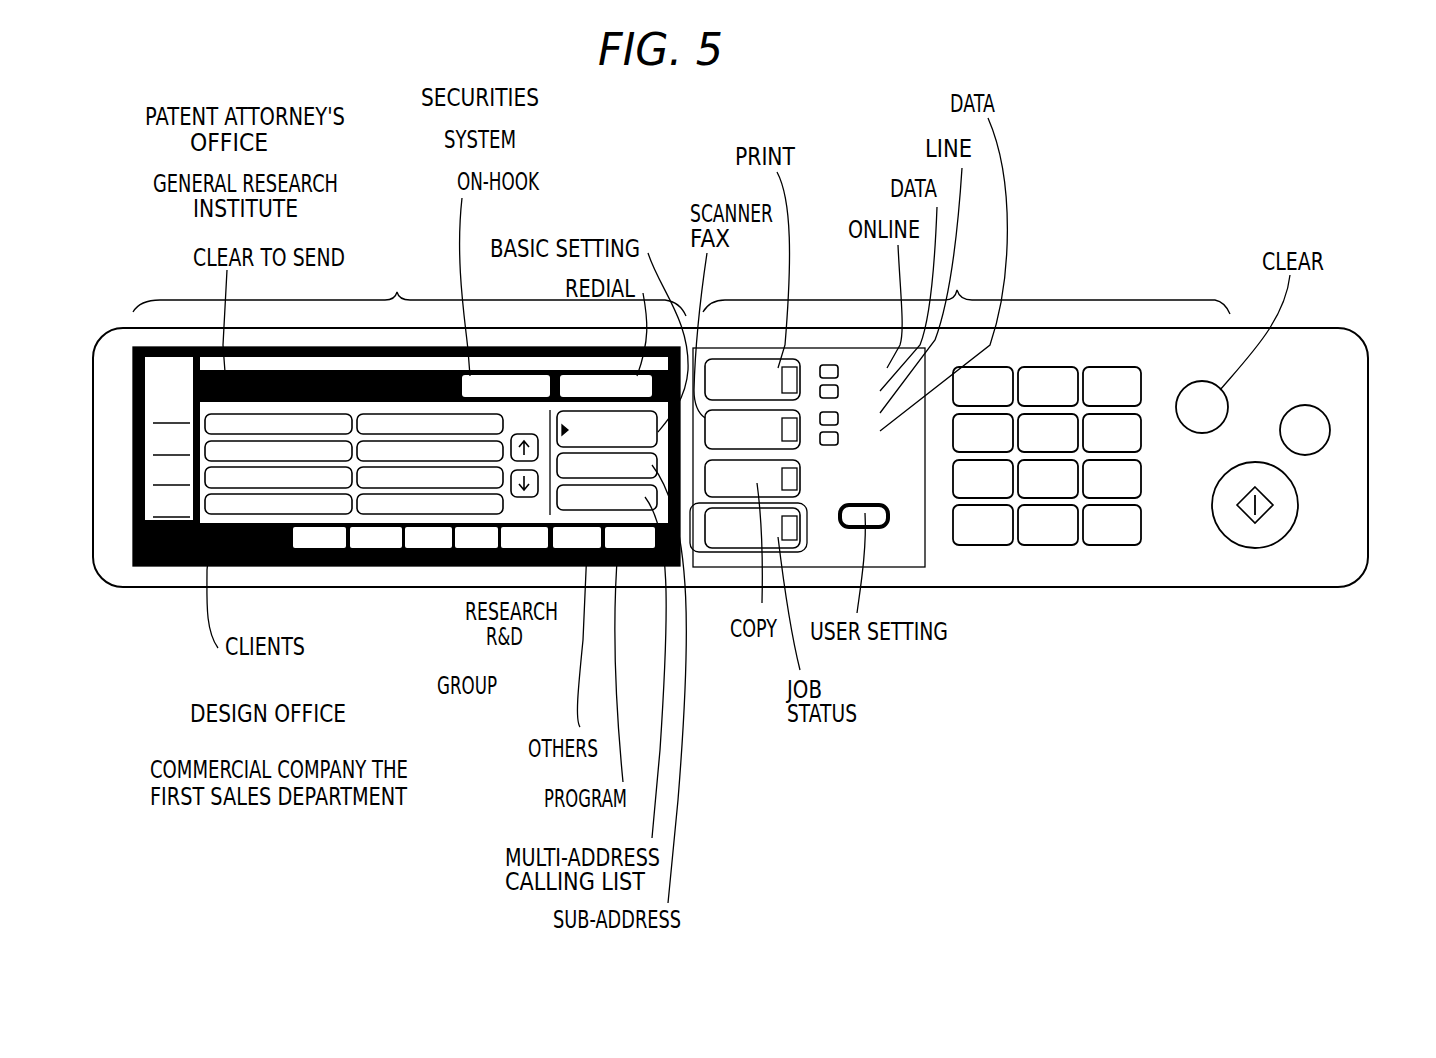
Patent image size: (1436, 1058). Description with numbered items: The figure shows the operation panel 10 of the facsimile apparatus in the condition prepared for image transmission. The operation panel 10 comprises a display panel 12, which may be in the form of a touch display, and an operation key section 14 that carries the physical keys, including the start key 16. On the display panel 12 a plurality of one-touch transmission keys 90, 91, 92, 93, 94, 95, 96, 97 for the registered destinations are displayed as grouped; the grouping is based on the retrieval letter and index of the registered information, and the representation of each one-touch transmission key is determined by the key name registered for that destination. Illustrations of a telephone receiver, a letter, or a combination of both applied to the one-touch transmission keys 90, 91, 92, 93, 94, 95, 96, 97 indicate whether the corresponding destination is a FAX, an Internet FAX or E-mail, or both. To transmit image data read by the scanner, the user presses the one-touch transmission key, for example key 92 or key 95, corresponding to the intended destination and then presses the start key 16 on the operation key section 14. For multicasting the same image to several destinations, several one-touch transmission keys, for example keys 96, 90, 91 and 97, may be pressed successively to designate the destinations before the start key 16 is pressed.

The operation panel 10 is at (1368, 383).
The display panel 12 is at (409, 447).
The operation key section 14 is at (956, 291).
The start key 16 is at (1258, 530).
The one-touch transmission key 90 is at (205, 422).
The one-touch transmission key 91 is at (430, 420).
The one-touch transmission key 92 is at (205, 450).
The one-touch transmission key 93 is at (443, 448).
The one-touch transmission key 94 is at (207, 480).
The one-touch transmission key 95 is at (462, 480).
The one-touch transmission key 96 is at (207, 512).
The one-touch transmission key 97 is at (435, 510).